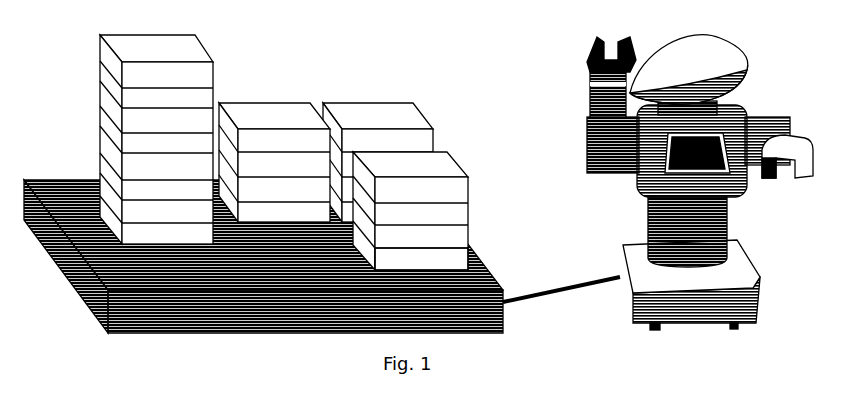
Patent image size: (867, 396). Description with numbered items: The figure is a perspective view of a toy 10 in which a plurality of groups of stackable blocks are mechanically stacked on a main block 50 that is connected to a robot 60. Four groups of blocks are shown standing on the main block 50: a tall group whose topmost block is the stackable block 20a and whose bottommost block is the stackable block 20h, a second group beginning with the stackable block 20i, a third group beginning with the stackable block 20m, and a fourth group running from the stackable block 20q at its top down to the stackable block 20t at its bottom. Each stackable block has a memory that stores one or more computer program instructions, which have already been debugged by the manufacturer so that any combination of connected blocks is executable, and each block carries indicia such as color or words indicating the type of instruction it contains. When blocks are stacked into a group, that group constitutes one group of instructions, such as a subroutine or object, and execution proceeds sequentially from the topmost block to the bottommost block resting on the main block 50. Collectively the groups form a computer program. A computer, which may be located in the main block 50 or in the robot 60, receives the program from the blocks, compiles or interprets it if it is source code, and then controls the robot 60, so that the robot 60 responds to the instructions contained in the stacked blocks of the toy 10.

The toy 10 is at (417, 178).
The stackable block 20a is at (100, 50).
The stackable block 20h is at (86, 182).
The stackable block 20i is at (263, 122).
The stackable block 20m is at (400, 109).
The stackable block 20q is at (435, 170).
The stackable block 20t is at (463, 257).
The main block 50 is at (73, 283).
The robot 60 is at (747, 268).